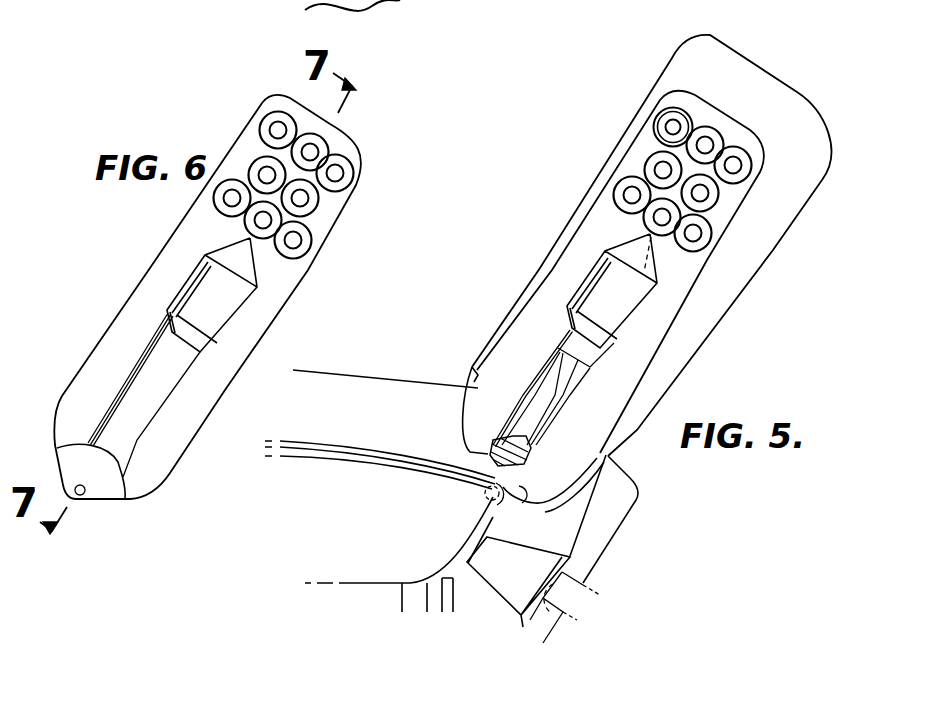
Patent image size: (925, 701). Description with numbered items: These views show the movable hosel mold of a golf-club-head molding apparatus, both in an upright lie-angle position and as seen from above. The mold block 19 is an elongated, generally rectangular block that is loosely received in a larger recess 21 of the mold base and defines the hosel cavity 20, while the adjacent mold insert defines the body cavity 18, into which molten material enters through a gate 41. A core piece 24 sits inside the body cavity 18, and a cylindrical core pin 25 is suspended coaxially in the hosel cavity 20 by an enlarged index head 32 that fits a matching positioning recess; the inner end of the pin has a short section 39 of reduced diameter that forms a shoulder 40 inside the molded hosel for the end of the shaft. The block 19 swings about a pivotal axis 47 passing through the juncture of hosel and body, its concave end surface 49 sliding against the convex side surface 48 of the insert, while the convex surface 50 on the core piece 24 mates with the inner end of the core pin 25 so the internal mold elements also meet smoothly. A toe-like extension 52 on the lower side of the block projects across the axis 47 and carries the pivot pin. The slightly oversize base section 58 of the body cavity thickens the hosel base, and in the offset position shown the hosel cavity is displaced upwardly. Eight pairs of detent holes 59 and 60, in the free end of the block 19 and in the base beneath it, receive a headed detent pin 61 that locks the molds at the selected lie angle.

In FIG. 5, the first cavity 18 is at (332, 450).
In FIG. 6, the second mold 19 is at (150, 235).
In FIG. 5, the second mold 19 is at (646, 343).
In FIG. 6, the second cavity 20 is at (160, 388).
In FIG. 5, the recess 21 is at (735, 288).
In FIG. 5, the core piece 24 is at (347, 532).
In FIG. 5, the core piece 25 is at (550, 397).
In FIG. 5, the index head 32 is at (624, 306).
In FIG. 6, the short section of reduced diameter 39 is at (232, 311).
In FIG. 5, the short section of reduced diameter 39 is at (490, 480).
In FIG. 5, the shoulder 40 is at (487, 477).
In FIG. 5, the gate 41 is at (530, 560).
In FIG. 5, the pivotal axis 47 is at (488, 493).
In FIG. 5, the arcuate surface 48 is at (524, 490).
In FIG. 6, the arcuate surface 49 is at (127, 483).
In FIG. 5, the arcuate surface 49 is at (553, 482).
In FIG. 5, the convex surface 50 is at (490, 507).
In FIG. 6, the toe-like extension 52 is at (93, 488).
In FIG. 5, the branch portion 58 is at (493, 448).
In FIG. 6, the detent holes 59 is at (338, 172).
In FIG. 5, the detent holes 59 is at (737, 152).
In FIG. 5, the detent holes 60 is at (708, 147).
In FIG. 5, the detent pin 61 is at (665, 112).